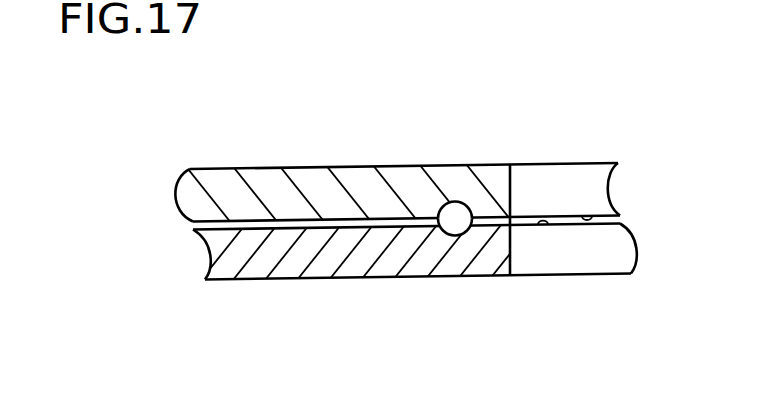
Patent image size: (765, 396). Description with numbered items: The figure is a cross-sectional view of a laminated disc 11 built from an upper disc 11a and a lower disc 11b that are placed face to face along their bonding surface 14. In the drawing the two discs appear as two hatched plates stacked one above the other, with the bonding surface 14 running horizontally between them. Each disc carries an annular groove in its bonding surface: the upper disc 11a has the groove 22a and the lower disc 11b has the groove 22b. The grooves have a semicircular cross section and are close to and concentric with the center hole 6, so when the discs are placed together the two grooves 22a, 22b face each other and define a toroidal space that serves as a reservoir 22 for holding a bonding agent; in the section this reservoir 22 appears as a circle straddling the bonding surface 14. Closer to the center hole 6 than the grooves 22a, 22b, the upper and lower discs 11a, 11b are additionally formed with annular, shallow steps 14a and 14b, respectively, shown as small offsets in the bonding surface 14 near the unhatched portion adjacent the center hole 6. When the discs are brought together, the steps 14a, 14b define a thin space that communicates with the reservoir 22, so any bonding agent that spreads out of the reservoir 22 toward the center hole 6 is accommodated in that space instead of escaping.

The center hole 6 is at (545, 180).
The laminated disc 11 is at (403, 222).
The upper disc 11a is at (353, 180).
The lower disc 11b is at (402, 268).
The bonding surface 14 is at (262, 224).
The annular shallow step 14a is at (598, 213).
The annular shallow step 14b is at (548, 225).
The reservoir 22 is at (453, 221).
The annular groove 22a is at (452, 206).
The annular groove 22b is at (454, 234).